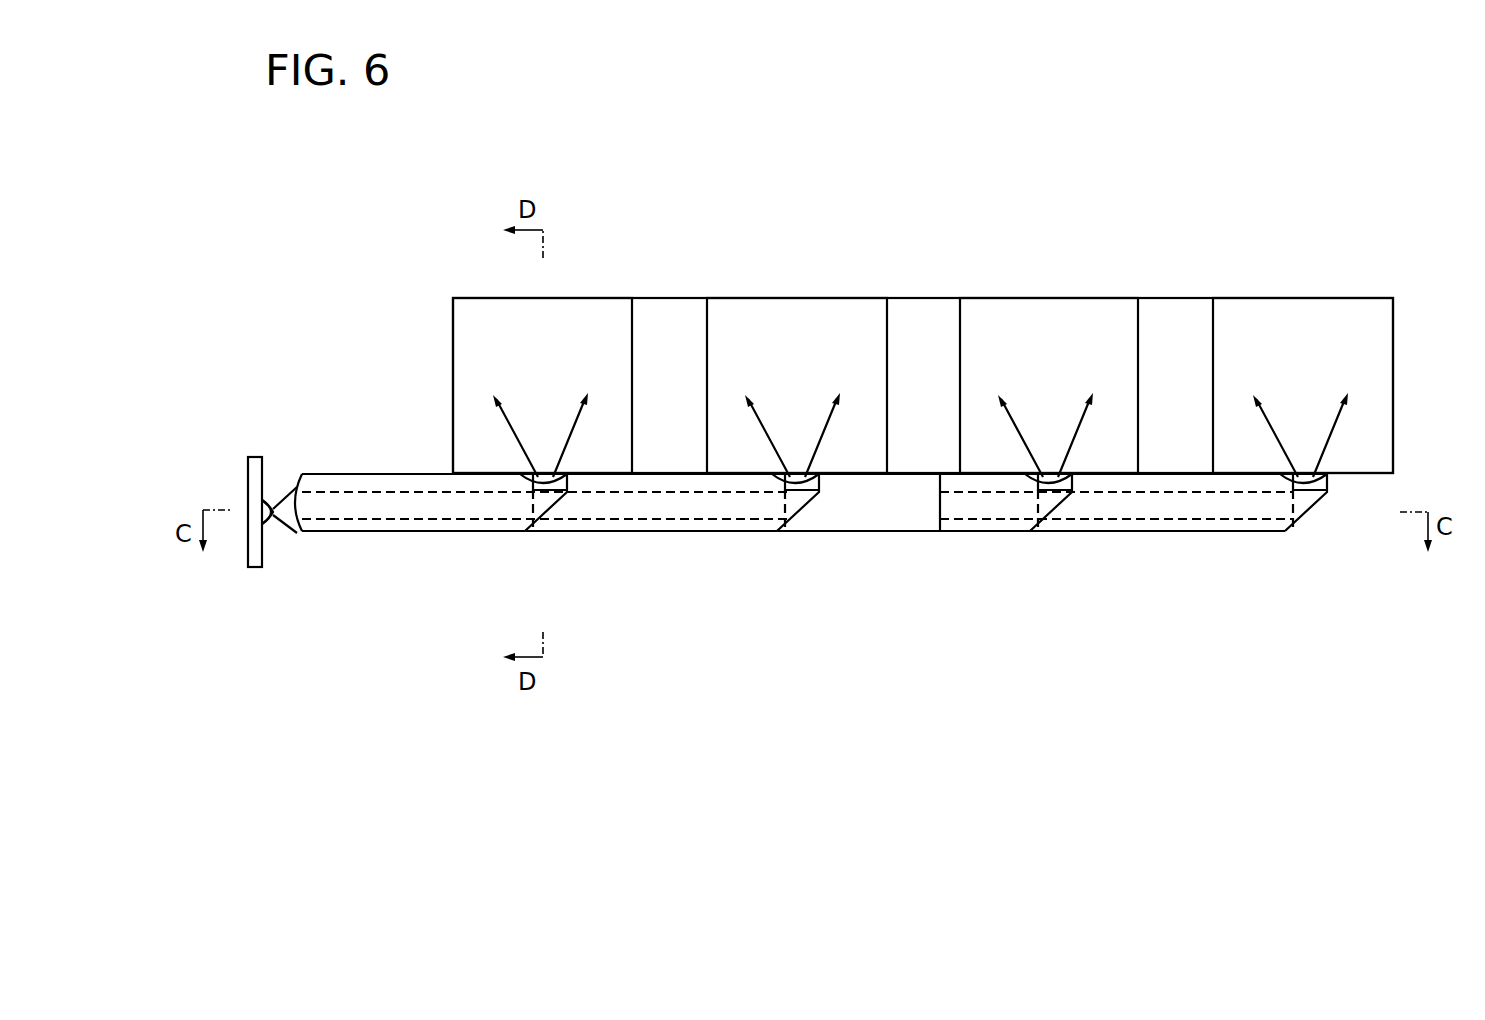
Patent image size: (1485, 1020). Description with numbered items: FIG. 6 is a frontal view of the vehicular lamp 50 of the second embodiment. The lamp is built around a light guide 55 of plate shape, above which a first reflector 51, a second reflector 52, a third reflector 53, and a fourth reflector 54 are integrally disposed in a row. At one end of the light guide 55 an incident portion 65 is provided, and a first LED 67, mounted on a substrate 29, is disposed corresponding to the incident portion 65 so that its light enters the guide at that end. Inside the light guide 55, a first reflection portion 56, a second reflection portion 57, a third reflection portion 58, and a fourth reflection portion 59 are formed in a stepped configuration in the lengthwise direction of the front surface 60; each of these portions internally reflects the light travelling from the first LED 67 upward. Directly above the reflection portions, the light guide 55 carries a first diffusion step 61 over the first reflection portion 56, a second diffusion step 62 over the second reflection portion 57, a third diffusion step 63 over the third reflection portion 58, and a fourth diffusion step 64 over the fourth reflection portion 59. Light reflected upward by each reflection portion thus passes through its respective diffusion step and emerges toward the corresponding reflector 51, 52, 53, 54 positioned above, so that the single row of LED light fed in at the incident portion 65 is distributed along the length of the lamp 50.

The substrate 29 is at (252, 568).
The vehicular lamp 50 is at (1148, 185).
The first reflector 51 is at (490, 298).
The second reflector 52 is at (794, 298).
The third reflector 53 is at (1045, 298).
The fourth reflector 54 is at (1299, 298).
The light guide 55 is at (365, 474).
The first reflection portion 56 is at (540, 533).
The second reflection portion 57 is at (798, 538).
The third reflection portion 58 is at (1051, 538).
The fourth reflection portion 59 is at (1306, 538).
The front surface 60 is at (397, 510).
The first diffusion step 61 is at (541, 480).
The second diffusion step 62 is at (792, 438).
The third diffusion step 63 is at (1045, 438).
The fourth diffusion step 64 is at (1300, 438).
The incident portion 65 is at (294, 490).
The first LED 67 is at (270, 524).